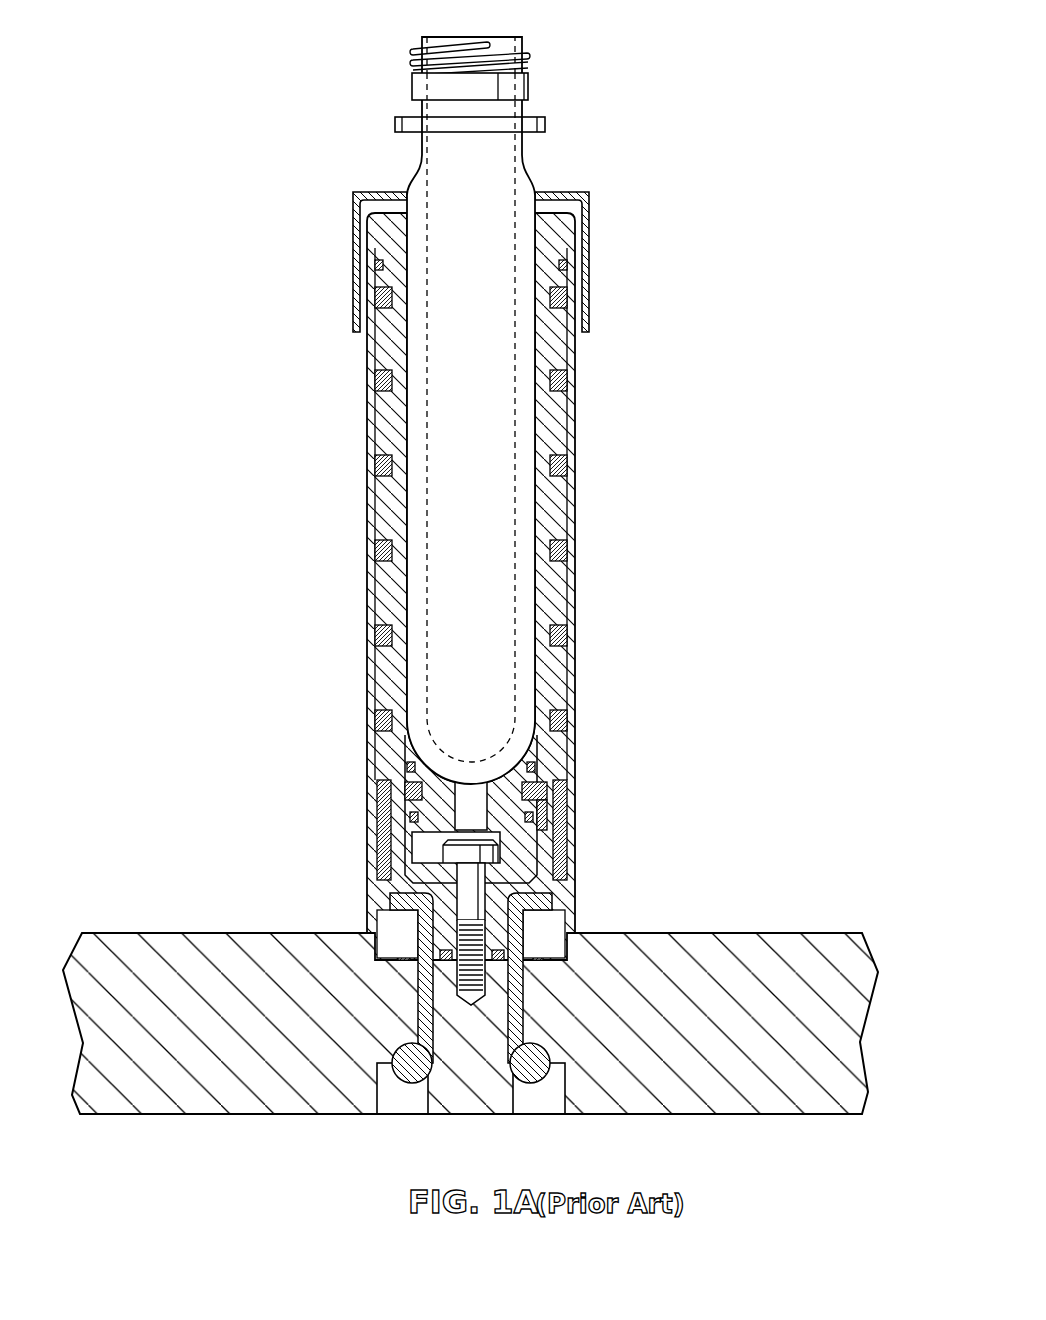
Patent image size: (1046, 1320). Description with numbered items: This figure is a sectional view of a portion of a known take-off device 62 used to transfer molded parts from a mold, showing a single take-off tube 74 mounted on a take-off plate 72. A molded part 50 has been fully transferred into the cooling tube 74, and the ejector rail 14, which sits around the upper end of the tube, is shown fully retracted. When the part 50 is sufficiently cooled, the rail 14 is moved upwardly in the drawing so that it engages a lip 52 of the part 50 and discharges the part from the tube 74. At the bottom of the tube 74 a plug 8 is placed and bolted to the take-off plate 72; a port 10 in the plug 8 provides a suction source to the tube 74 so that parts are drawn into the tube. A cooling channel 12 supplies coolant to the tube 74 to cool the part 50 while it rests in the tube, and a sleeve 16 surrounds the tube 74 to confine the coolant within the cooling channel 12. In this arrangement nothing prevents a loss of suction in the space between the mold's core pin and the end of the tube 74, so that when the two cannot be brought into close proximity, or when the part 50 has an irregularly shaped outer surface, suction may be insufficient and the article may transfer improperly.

The molded part 50 is at (525, 80).
The lip 52 is at (545, 123).
The take-off tube 74 is at (553, 232).
The ejector rail 14 is at (590, 270).
The sleeve 16 is at (540, 498).
The plug 8 is at (532, 770).
The port 10 is at (475, 803).
The cooling channel 12 is at (575, 853).
The take-off plate 72 is at (755, 953).
The take-off device 62 is at (830, 911).